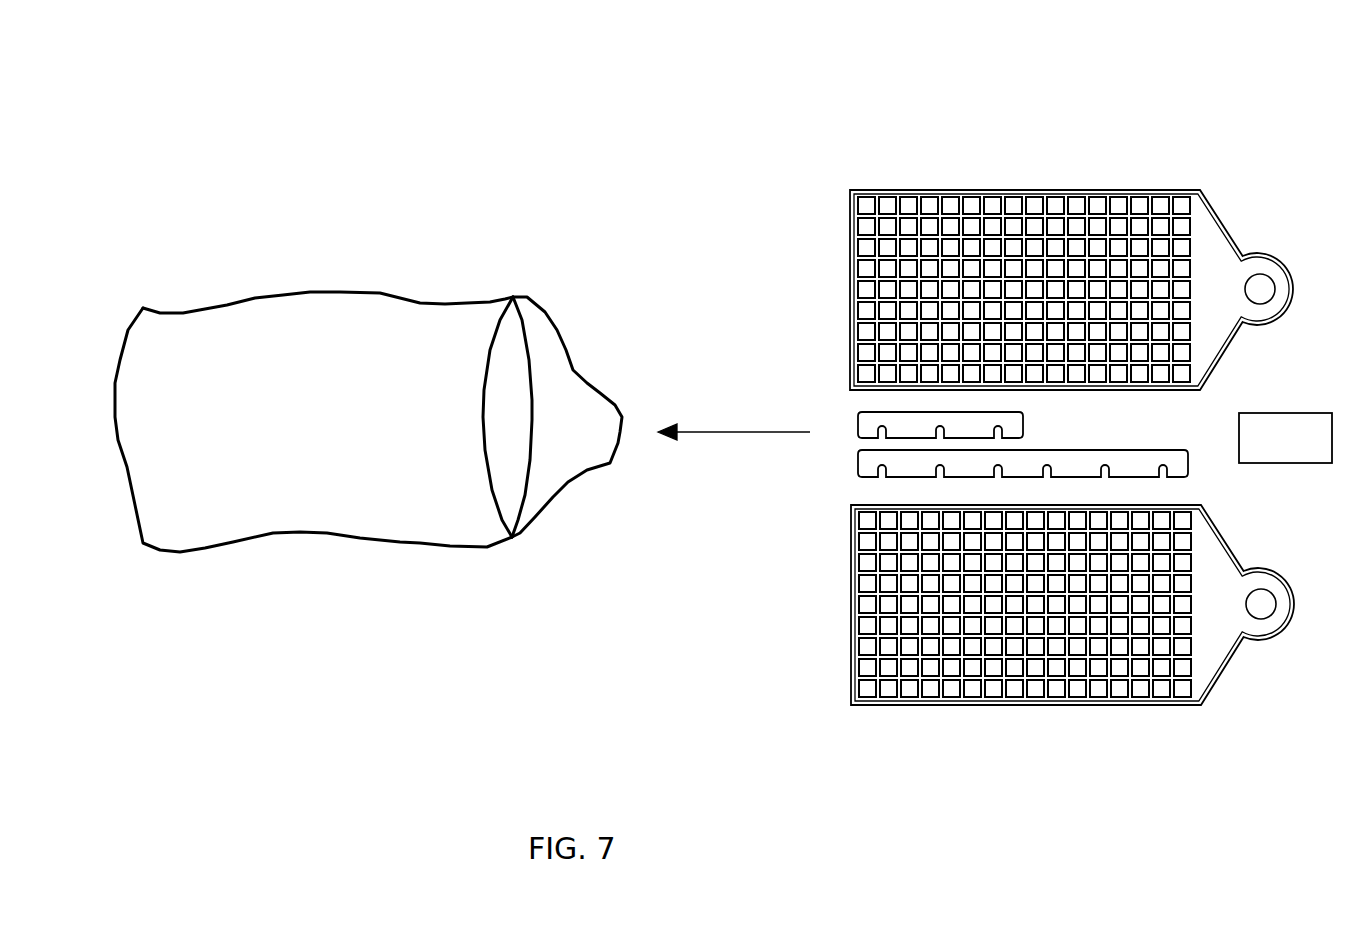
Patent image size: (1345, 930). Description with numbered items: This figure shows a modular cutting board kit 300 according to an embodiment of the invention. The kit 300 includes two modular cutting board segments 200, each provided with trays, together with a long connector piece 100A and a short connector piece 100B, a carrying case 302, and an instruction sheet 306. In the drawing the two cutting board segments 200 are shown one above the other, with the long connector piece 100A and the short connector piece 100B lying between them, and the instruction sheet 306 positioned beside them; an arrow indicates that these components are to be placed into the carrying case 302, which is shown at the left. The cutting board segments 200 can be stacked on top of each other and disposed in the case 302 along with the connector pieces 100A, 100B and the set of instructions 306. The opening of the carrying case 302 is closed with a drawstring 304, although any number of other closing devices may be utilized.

The long connector piece 100A is at (858, 465).
The short connector piece 100B is at (858, 423).
The modular cutting board segment 200 is at (1047, 187).
The modular cutting board kit 300 is at (387, 427).
The carrying case 302 is at (227, 305).
The drawstring 304 is at (562, 497).
The instruction sheet 306 is at (1281, 463).